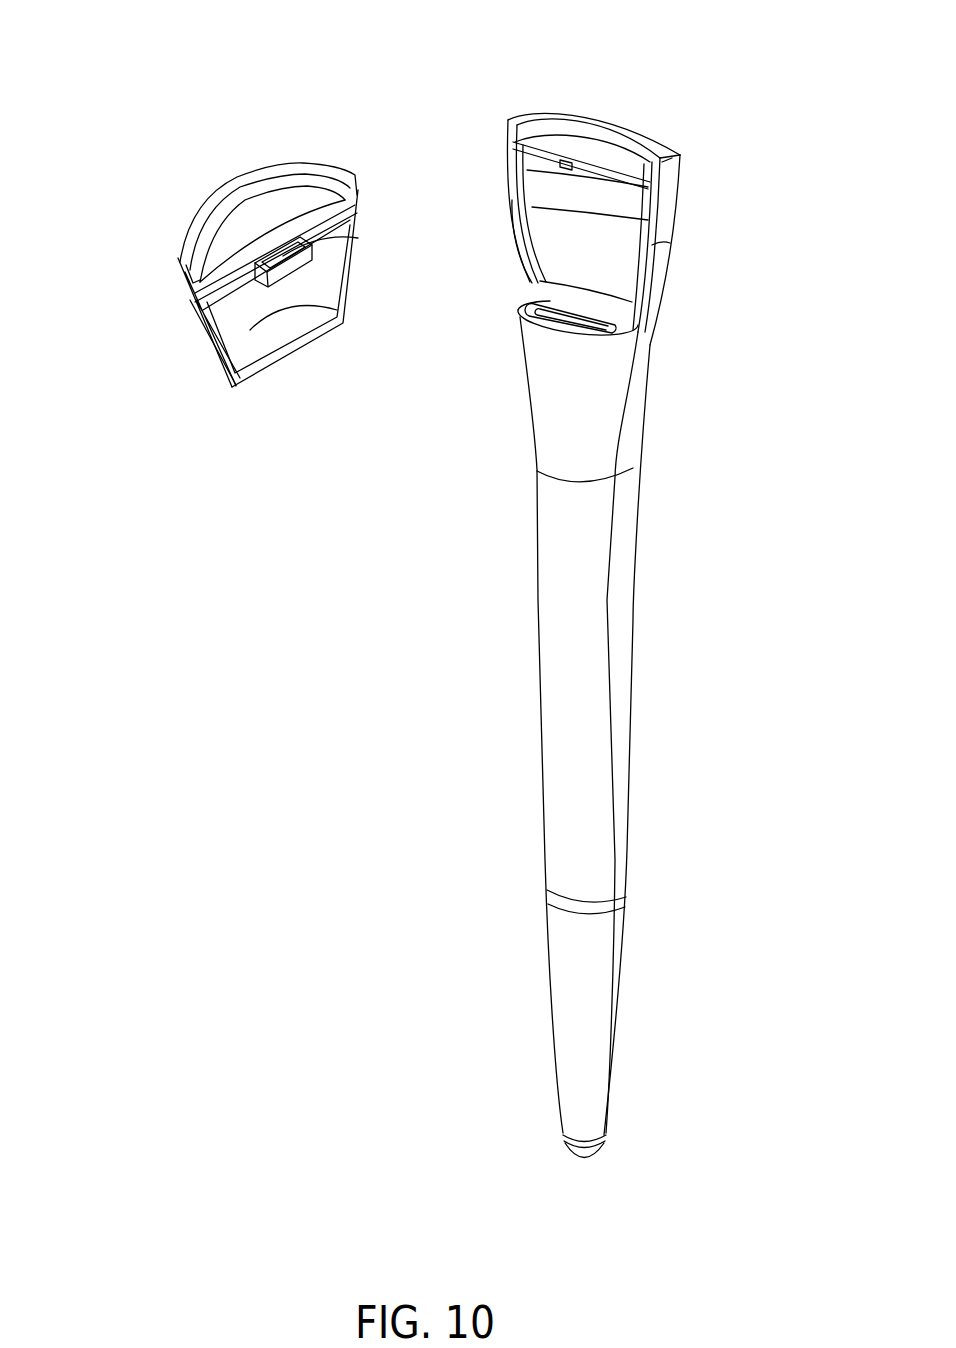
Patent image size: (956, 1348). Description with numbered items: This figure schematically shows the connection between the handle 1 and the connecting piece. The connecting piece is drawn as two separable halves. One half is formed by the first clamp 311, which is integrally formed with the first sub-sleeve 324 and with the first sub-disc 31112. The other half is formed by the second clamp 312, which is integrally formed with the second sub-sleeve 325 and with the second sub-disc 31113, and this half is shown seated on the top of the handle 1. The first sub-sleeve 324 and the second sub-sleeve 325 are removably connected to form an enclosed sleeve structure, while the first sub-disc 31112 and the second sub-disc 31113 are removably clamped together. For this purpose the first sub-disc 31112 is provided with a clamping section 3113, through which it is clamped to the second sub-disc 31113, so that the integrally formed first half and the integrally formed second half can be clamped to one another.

The handle 1 is at (582, 735).
The first clamp 311 is at (242, 180).
The second clamp 312 is at (670, 143).
The first sub-sleeve 324 is at (215, 345).
The second sub-sleeve 325 is at (530, 253).
The clamping section 3113 is at (285, 280).
The first sub-disc 31112 is at (278, 203).
The second sub-disc 31113 is at (598, 153).